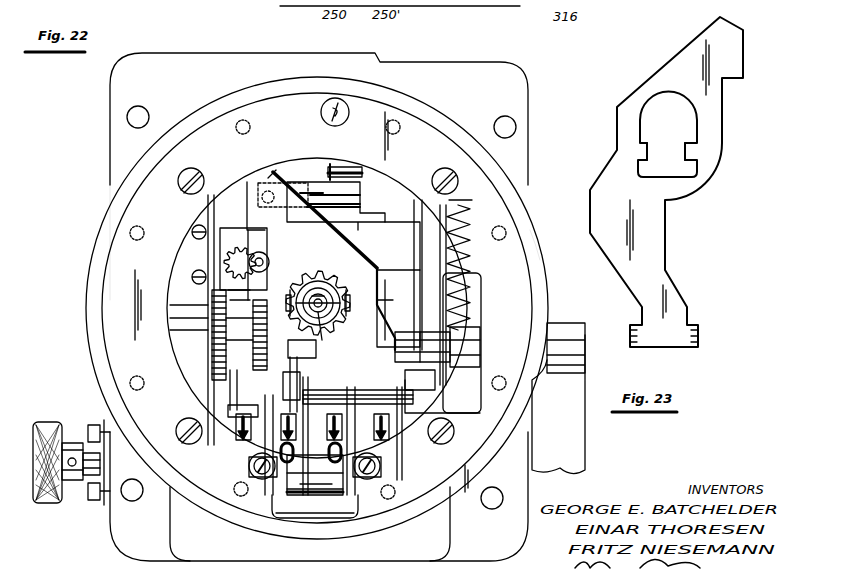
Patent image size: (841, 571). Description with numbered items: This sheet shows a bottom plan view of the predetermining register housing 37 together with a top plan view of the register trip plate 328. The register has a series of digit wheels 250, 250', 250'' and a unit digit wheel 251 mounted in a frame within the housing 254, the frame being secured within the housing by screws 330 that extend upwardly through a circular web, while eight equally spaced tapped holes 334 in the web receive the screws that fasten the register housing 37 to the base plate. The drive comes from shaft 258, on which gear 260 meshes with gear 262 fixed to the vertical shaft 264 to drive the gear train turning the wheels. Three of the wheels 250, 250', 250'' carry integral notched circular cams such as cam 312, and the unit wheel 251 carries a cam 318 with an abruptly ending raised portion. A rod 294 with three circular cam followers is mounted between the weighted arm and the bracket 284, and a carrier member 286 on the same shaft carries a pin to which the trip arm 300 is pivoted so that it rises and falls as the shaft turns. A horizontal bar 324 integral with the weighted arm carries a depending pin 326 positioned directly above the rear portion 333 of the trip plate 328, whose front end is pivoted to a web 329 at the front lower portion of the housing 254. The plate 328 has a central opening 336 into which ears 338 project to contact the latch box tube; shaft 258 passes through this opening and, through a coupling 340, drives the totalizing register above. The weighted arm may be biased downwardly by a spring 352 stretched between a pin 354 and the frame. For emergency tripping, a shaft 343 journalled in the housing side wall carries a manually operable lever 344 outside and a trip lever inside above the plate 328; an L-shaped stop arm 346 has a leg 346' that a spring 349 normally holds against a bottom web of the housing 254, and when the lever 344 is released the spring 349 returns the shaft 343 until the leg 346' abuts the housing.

In FIG. 22, the register housing 37 is at (101, 183).
In FIG. 22, the screws 330 is at (192, 170).
In FIG. 22, the tapped holes 334 is at (394, 133).
In FIG. 22, the spring 349 is at (452, 184).
In FIG. 22, the housing 254 is at (534, 240).
In FIG. 22, the gear 262 is at (236, 245).
In FIG. 22, the shaft 264 is at (265, 240).
In FIG. 22, the pin 326 is at (266, 190).
In FIG. 22, the horizontal bar 324 is at (302, 185).
In FIG. 22, the pin 354 is at (350, 167).
In FIG. 22, the spring 352 is at (328, 164).
In FIG. 22, the rear portion 333 is at (278, 172).
In FIG. 23, the rear portion 333 is at (735, 38).
In FIG. 22, the trip plate 328 is at (318, 222).
In FIG. 23, the trip plate 328 is at (662, 226).
In FIG. 22, the gear 260 is at (360, 265).
In FIG. 22, the central opening 336 is at (297, 273).
In FIG. 23, the central opening 336 is at (676, 103).
In FIG. 22, the coupling 340 is at (320, 292).
In FIG. 22, the ears 338 is at (350, 300).
In FIG. 23, the ears 338 is at (688, 148).
In FIG. 22, the carrier member 286 is at (212, 368).
In FIG. 22, the bracket 284 is at (290, 360).
In FIG. 22, the shaft 258 is at (324, 320).
In FIG. 22, the rod 294 is at (370, 390).
In FIG. 22, the trip arm 300 is at (283, 384).
In FIG. 22, the digit wheel 250 is at (328, 438).
In FIG. 22, the digit wheel 250' is at (316, 480).
In FIG. 22, the digit wheel 250'' is at (315, 475).
In FIG. 22, the cam 318 is at (249, 465).
In FIG. 22, the unit digit wheel 251 is at (240, 420).
In FIG. 22, the web 329 is at (275, 518).
In FIG. 22, the leg 346' is at (478, 333).
In FIG. 22, the stop arm 346 is at (479, 265).
In FIG. 22, the shaft 343 is at (480, 338).
In FIG. 22, the circular cam 312 is at (415, 395).
In FIG. 22, the manually operable lever 344 is at (590, 463).